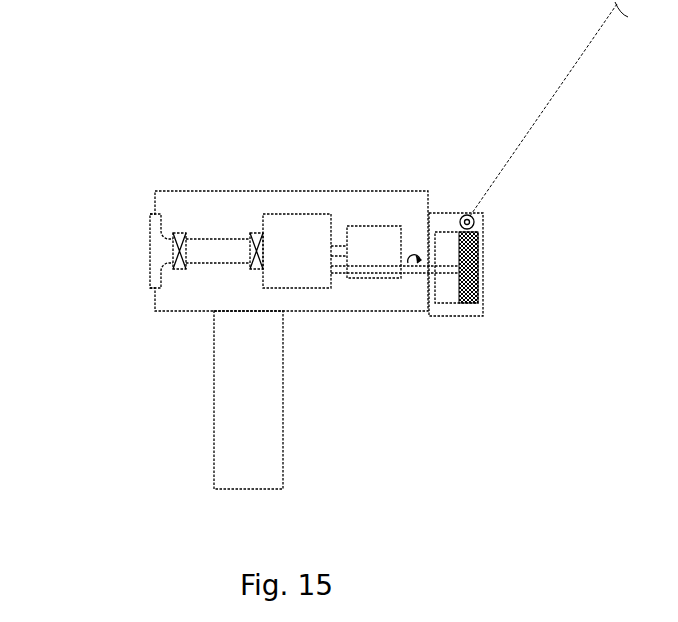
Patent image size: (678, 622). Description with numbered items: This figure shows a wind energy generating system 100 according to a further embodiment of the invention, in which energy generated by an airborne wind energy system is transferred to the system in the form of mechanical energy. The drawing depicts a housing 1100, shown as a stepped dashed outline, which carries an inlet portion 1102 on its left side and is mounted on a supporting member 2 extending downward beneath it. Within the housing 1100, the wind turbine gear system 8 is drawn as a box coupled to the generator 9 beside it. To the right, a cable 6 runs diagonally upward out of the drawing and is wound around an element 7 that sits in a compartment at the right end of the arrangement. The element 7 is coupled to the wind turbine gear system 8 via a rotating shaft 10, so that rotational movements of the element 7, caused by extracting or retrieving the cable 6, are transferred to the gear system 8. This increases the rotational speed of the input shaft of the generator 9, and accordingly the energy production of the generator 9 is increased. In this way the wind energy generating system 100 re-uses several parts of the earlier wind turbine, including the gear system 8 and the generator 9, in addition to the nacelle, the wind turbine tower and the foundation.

The wind energy generating system 100 is at (85, 57).
The housing 1100 is at (173, 208).
The inlet tube with couplings 1102 is at (215, 247).
The wind turbine gear system 8 is at (296, 235).
The generator 9 is at (376, 235).
The rotating shaft 10 is at (416, 275).
The element 7 is at (450, 295).
The cable 6 is at (541, 113).
The handle 2 is at (257, 416).